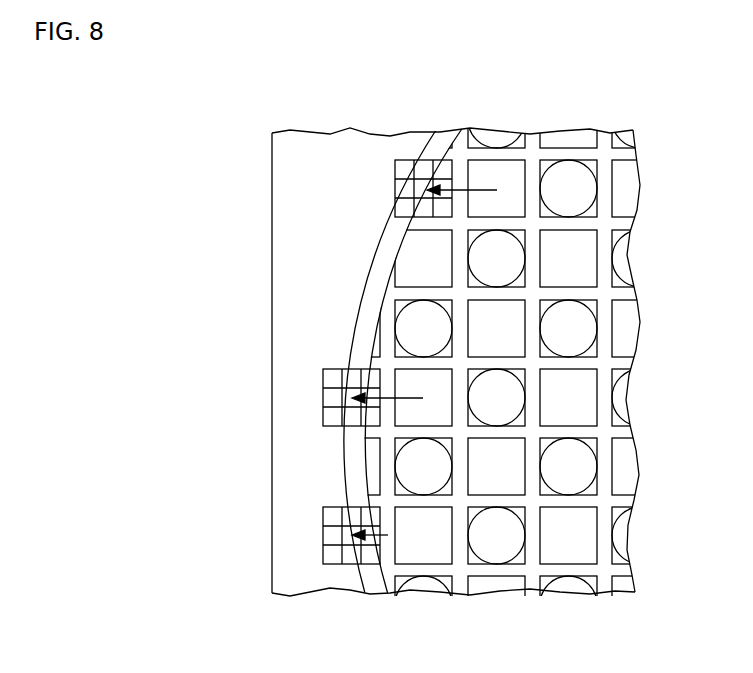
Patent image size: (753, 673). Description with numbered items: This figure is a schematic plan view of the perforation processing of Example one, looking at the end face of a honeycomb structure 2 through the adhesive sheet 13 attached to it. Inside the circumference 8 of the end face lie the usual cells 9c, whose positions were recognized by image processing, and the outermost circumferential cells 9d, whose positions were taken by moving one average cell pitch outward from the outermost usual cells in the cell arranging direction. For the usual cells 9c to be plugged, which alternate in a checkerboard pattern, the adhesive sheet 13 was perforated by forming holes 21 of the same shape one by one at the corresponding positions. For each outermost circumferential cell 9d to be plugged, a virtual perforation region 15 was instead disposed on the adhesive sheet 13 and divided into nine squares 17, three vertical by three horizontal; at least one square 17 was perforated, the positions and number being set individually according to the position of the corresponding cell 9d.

The honeycomb structure 2 is at (345, 361).
The circumference 8 is at (324, 361).
The usual cell 9c is at (511, 372).
The outermost circumferential cell 9d is at (497, 616).
The adhesive sheet 13 is at (427, 362).
The virtual perforation region 15 is at (332, 362).
The square 17 is at (341, 363).
The hole 21 is at (517, 362).